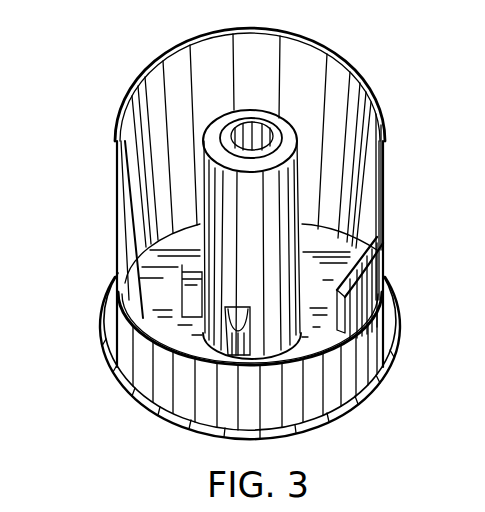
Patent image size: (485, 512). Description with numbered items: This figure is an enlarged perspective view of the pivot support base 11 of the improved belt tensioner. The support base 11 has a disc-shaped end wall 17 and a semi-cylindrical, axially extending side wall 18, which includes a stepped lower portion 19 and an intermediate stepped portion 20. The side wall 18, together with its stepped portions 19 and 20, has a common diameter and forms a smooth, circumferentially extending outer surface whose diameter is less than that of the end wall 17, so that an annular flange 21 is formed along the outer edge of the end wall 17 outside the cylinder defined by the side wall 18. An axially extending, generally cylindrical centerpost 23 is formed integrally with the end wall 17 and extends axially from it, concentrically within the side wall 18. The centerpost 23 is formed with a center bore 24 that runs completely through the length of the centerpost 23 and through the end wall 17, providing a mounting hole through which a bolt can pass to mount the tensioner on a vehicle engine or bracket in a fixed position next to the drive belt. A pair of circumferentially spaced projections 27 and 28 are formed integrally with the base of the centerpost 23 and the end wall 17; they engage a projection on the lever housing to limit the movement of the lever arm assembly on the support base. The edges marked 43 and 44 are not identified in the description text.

The support base 11 is at (330, 39).
The side wall 18 is at (335, 87).
The left wall edge 44 is at (120, 214).
The right wall edge 43 is at (377, 208).
The projection 27 is at (121, 290).
The end wall 17 is at (330, 343).
The stepped lower portion 19 is at (290, 385).
The annular flange 21 is at (133, 377).
The intermediate stepped portion 20 is at (385, 280).
The centerpost 23 is at (280, 188).
The center bore 24 is at (250, 132).
The projection 28 is at (231, 333).